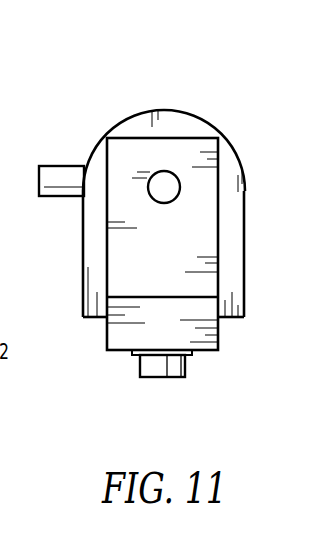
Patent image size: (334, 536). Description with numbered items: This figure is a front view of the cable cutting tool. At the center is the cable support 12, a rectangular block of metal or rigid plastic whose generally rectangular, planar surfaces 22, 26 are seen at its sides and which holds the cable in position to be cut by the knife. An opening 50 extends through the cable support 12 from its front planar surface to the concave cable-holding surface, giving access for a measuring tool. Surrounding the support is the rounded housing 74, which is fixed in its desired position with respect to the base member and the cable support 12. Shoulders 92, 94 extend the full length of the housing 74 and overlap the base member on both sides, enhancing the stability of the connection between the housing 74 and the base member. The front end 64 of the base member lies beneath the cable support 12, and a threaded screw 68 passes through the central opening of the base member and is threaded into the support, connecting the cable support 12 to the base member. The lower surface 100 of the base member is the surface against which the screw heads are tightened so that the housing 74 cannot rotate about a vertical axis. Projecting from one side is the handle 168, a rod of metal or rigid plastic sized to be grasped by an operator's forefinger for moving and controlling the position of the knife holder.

The cable support 12 is at (202, 240).
The planar surface 22 is at (220, 202).
The planar surface 26 is at (107, 200).
The opening 50 is at (181, 187).
The front end 64 is at (183, 322).
The threaded screw 68 is at (153, 367).
The housing 74 is at (190, 112).
The shoulder 92 is at (100, 320).
The shoulder 94 is at (222, 318).
The lower surface 100 is at (210, 355).
The handle 168 is at (65, 165).